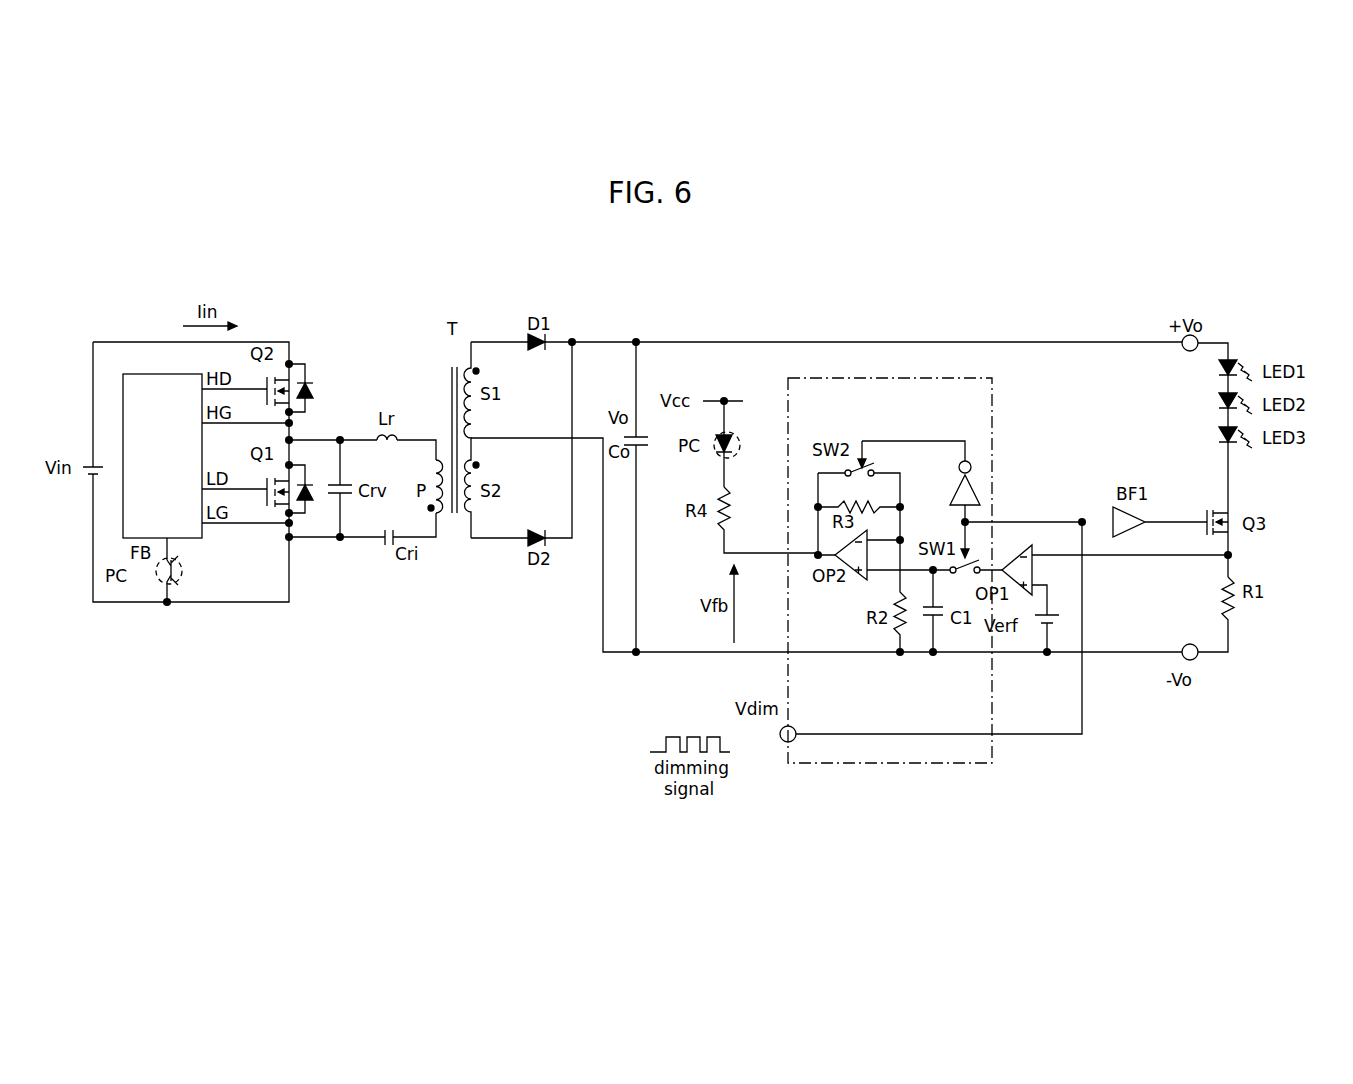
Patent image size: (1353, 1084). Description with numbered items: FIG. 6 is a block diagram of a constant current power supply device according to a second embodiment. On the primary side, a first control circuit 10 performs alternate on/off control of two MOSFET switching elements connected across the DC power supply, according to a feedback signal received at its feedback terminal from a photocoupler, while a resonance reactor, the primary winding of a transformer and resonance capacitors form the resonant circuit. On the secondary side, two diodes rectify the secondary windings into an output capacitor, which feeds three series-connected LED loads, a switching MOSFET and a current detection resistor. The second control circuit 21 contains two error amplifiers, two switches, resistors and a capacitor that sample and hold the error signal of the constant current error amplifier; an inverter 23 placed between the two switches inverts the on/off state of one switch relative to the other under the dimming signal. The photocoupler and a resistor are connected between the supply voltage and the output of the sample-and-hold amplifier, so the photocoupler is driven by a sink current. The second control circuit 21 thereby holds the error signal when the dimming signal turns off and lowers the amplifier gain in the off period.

The first control circuit 10 is at (185, 538).
The second control circuit 21 is at (992, 424).
The inverter 23 is at (976, 490).